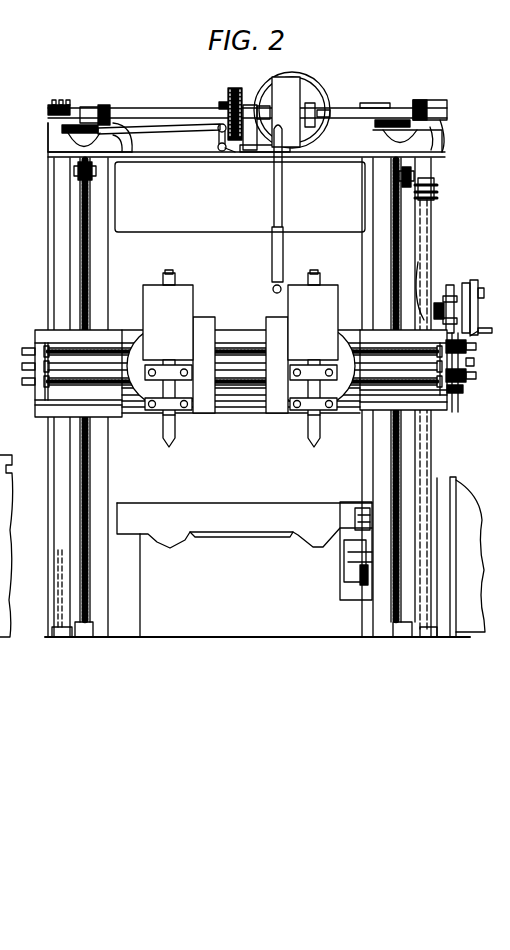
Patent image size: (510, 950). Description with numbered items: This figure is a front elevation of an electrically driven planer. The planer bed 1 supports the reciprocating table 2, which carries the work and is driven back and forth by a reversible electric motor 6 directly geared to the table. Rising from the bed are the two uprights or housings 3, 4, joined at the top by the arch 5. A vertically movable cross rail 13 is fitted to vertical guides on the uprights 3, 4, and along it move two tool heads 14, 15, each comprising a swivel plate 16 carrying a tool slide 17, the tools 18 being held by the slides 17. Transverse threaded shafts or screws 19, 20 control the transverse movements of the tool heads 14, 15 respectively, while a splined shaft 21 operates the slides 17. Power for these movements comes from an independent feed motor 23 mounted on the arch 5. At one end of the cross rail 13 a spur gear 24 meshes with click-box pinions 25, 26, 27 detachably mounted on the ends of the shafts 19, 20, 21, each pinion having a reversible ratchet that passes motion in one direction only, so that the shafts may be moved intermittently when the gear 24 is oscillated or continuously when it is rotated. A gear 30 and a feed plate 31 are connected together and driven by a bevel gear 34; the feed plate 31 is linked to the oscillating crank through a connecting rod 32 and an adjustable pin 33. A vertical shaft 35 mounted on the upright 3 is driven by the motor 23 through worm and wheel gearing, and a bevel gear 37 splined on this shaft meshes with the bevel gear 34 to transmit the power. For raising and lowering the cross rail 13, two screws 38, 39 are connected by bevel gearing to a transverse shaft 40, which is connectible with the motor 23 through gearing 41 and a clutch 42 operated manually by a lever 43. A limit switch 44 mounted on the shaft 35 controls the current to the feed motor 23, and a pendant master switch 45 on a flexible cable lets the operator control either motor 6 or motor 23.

The planer bed 1 is at (244, 570).
The reciprocating table 2 is at (6, 546).
The upright 3 is at (376, 447).
The upright 4 is at (107, 466).
The arch 5 is at (240, 197).
The reversible electric motor 6 is at (473, 497).
The cross rail 13 is at (228, 332).
The tool head 14 is at (352, 318).
The tool head 15 is at (203, 317).
The swivel plate 16 is at (198, 390).
The tool slide 17 is at (182, 292).
The tool 18 is at (170, 446).
The transverse threaded shaft 19 is at (378, 340).
The transverse threaded shaft 20 is at (371, 386).
The splined shaft 21 is at (417, 387).
The independent electric motor 23 is at (292, 85).
The spur gear 24 is at (460, 405).
The pinion 25 is at (476, 349).
The pinion 26 is at (462, 389).
The pinion 27 is at (476, 375).
The gear 30 is at (450, 290).
The feed plate 31 is at (472, 290).
The connecting rod 32 is at (479, 305).
The adjustable pin 33 is at (491, 290).
The bevel gear 34 is at (441, 302).
The vertical shaft 35 is at (428, 248).
The bevel gear 37 is at (424, 282).
The screw 38 is at (417, 170).
The screw 39 is at (72, 167).
The transverse shaft 40 is at (188, 110).
The gearing 41 is at (238, 95).
The clutch 42 is at (218, 102).
The lever 43 is at (48, 240).
The limit switch 44 is at (436, 190).
The master switch 45 is at (272, 267).